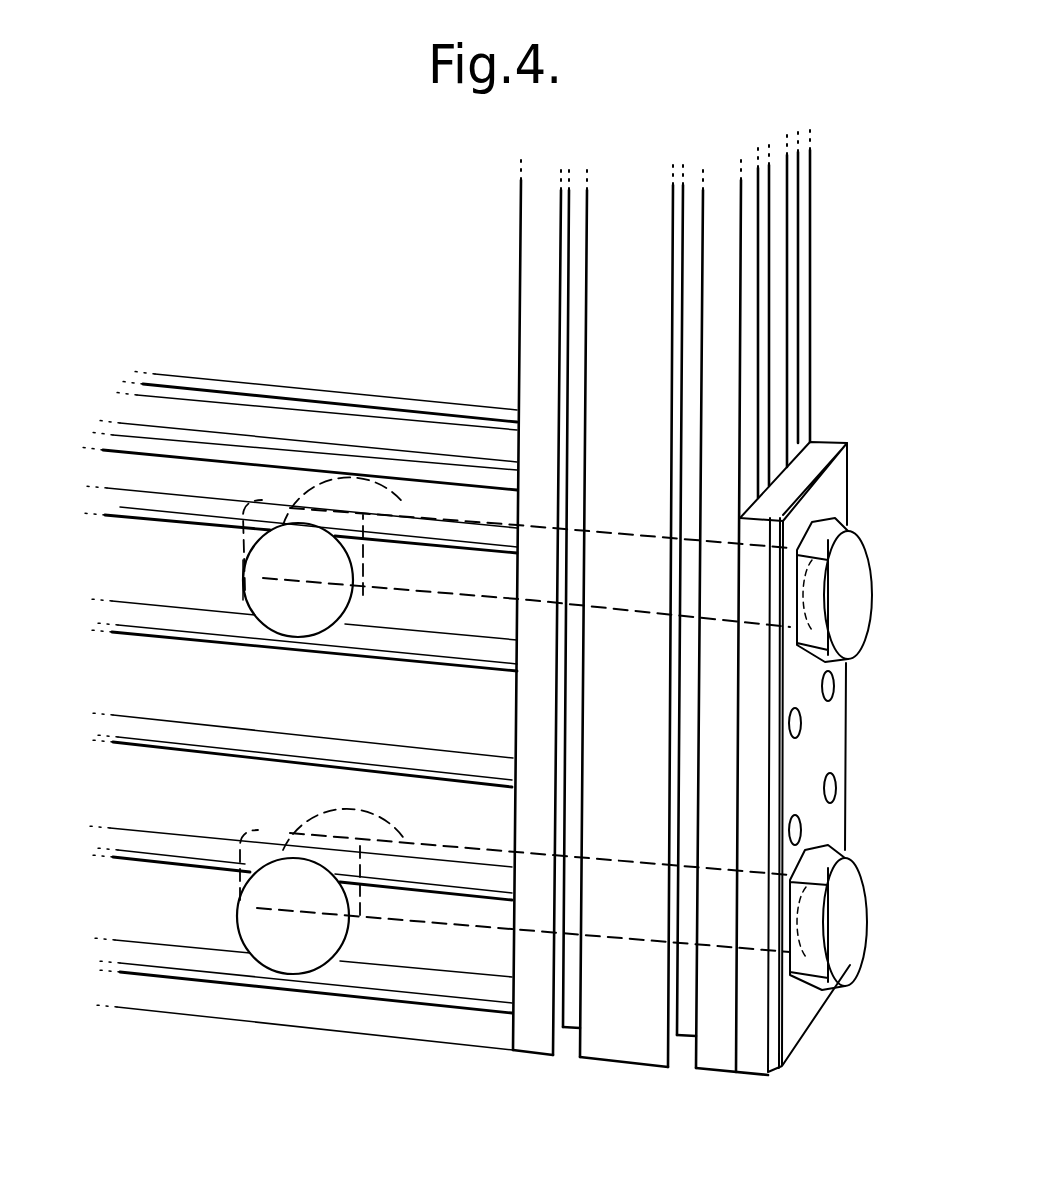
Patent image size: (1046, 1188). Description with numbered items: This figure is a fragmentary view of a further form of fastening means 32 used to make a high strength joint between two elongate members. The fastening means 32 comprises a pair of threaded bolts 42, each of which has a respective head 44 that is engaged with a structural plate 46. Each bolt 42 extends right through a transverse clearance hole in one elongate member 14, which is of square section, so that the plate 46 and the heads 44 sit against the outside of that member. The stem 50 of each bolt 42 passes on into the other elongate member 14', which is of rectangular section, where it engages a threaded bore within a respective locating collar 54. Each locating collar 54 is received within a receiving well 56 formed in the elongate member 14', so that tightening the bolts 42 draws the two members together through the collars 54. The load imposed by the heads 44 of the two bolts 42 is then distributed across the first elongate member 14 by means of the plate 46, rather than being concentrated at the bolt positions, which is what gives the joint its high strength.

The elongate member 14 is at (661, 635).
The elongate member 14' is at (298, 736).
The fastening means 32 is at (828, 360).
The threaded bolt 42 is at (545, 533).
The head 44 is at (860, 600).
The structural plate 46 is at (822, 750).
The stem 50 is at (427, 563).
The locating collar 54 is at (292, 553).
The receiving well 56 is at (258, 586).